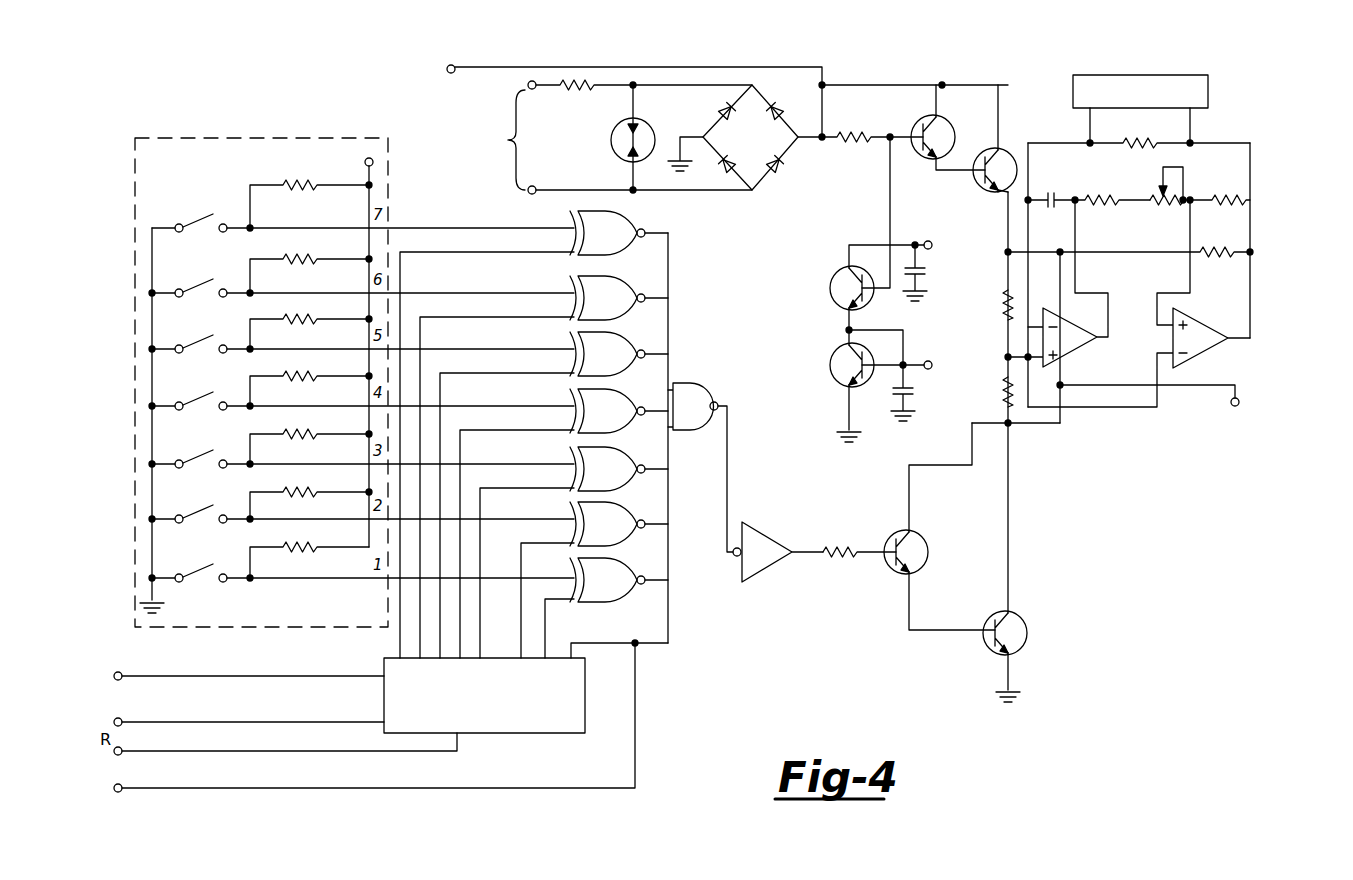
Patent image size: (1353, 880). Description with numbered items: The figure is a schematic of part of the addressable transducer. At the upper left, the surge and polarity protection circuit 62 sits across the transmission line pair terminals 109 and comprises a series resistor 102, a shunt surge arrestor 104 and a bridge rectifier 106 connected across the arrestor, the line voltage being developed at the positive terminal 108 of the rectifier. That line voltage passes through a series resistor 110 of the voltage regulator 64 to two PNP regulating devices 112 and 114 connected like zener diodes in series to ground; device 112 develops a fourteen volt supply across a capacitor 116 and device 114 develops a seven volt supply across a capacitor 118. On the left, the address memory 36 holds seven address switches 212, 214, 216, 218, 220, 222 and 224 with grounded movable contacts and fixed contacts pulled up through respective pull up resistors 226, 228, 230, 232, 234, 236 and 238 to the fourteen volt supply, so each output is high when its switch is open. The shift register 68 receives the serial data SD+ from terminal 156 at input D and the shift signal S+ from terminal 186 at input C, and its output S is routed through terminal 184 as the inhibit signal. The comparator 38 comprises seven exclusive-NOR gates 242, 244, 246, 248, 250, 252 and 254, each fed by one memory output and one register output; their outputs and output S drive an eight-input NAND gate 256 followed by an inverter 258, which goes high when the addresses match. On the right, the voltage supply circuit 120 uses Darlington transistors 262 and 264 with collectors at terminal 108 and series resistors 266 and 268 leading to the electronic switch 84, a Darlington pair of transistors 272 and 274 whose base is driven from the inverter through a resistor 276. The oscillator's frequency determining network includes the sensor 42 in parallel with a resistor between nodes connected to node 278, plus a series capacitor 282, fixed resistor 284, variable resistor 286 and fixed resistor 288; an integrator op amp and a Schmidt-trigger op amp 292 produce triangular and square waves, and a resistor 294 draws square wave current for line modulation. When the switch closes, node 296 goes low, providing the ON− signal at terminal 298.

The address memory 36 is at (229, 136).
The comparator 38 is at (716, 273).
The sensor 42 is at (1188, 77).
The surge and polarity protection circuit 62 is at (714, 82).
The voltage regulator 64 is at (867, 210).
The shift register 68 is at (632, 672).
The electronic switch 84 is at (1018, 563).
The series resistor 102 is at (583, 92).
The shunt surge arrestor 104 is at (648, 118).
The bridge rectifier 106 is at (763, 99).
The positive terminal 108 is at (824, 136).
The transmission line terminals 109 is at (455, 72).
The series resistor 110 is at (844, 153).
The voltage regulating device 112 is at (832, 284).
The voltage regulating device 114 is at (832, 364).
The capacitor 116 is at (920, 280).
The capacitor 118 is at (902, 401).
The voltage supply circuit 120 is at (1060, 102).
The terminal 156 is at (120, 680).
The terminal 184 is at (121, 793).
The terminal 186 is at (120, 726).
The address switch 212 is at (235, 560).
The address switch 214 is at (235, 501).
The address switch 216 is at (235, 446).
The address switch 218 is at (235, 388).
The address switch 220 is at (235, 331).
The address switch 222 is at (235, 275).
The address switch 224 is at (235, 210).
The pull up resistor 226 is at (291, 545).
The pull up resistor 228 is at (291, 490).
The pull up resistor 230 is at (291, 432).
The pull up resistor 232 is at (291, 374).
The pull up resistor 234 is at (291, 317).
The pull up resistor 236 is at (291, 257).
The pull up resistor 238 is at (291, 183).
The exclusive-NOR gate 242 is at (614, 552).
The exclusive-NOR gate 244 is at (614, 496).
The exclusive-NOR gate 246 is at (614, 441).
The exclusive-NOR gate 248 is at (614, 383).
The exclusive-NOR gate 250 is at (614, 326).
The exclusive-NOR gate 252 is at (614, 270).
The exclusive-NOR gate 254 is at (637, 230).
The eight-input NAND gate 256 is at (692, 381).
The inverter 258 is at (773, 532).
The transistor 262 is at (955, 123).
The transistor 264 is at (975, 194).
The resistor 266 is at (998, 320).
The resistor 268 is at (975, 403).
The transistor 272 is at (928, 551).
The transistor 274 is at (1028, 630).
The resistor 276 is at (842, 546).
The node 278 is at (1252, 203).
The capacitor 282 is at (1072, 172).
The fixed resistor 284 is at (1125, 175).
The variable resistor 286 is at (1167, 190).
The fixed resistor 288 is at (1217, 193).
The op amp 292 is at (1222, 306).
The resistor 294 is at (1207, 253).
The node 296 is at (1010, 426).
The terminal 298 is at (1230, 404).